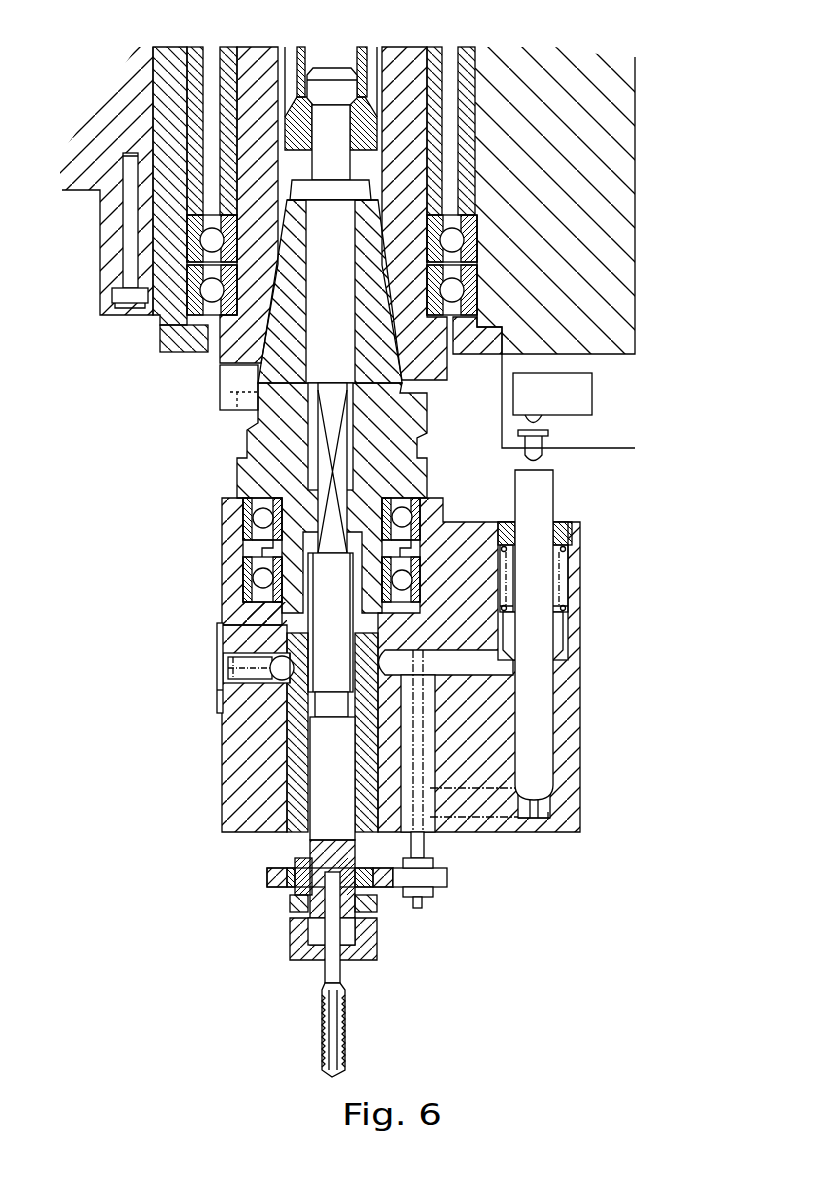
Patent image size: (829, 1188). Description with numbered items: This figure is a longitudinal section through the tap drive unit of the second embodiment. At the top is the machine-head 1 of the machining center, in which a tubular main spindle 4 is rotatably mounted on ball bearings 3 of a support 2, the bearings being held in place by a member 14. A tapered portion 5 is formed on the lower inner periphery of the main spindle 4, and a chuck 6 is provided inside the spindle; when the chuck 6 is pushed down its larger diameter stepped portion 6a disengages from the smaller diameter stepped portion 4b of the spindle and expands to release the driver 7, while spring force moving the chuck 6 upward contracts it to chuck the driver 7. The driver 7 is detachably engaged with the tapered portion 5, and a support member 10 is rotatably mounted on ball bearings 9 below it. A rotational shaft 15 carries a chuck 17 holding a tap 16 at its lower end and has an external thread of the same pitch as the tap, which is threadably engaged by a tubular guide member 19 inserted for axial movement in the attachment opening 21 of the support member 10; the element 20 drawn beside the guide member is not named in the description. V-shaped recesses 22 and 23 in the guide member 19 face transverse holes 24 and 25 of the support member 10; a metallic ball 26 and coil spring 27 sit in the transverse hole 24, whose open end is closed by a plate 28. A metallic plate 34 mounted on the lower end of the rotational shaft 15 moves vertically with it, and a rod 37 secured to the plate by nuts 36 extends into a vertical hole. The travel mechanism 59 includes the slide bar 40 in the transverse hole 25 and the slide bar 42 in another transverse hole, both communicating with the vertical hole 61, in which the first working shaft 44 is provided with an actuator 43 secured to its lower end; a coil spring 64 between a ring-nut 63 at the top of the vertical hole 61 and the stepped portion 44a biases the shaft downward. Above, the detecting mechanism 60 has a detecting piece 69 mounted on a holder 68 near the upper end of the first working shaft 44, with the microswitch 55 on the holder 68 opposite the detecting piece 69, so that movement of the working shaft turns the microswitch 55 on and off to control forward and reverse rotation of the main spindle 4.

The machine-head 1 is at (68, 192).
The support 2 is at (117, 316).
The ball bearings 3 is at (478, 246).
The main spindle 4 is at (405, 60).
The smaller diameter stepped portion 4b is at (372, 85).
The tapered portion 5 is at (370, 302).
The chuck 6 is at (388, 110).
The larger diameter stepped portion 6a is at (378, 92).
The driver 7 is at (237, 480).
The ball bearings 9 is at (420, 514).
The support member 10 is at (222, 533).
The member 14 is at (172, 353).
The rotational shaft 15 is at (280, 858).
The tap 16 is at (346, 1042).
The chuck 17 is at (378, 957).
The tubular guide member 19 is at (292, 780).
The sleeve tube 20 is at (309, 654).
The attachment opening 21 is at (292, 834).
The V-shaped recess 22 is at (285, 657).
The V-shaped recess 23 is at (385, 682).
The transverse hole 24 is at (245, 674).
The transverse hole 25 is at (438, 652).
The metallic ball 26 is at (283, 684).
The coil spring 27 is at (222, 652).
The plate 28 is at (218, 699).
The metallic plate 34 is at (386, 889).
The nuts 36 is at (433, 882).
The rod 37 is at (418, 912).
The slide bar 40 is at (470, 642).
The slide bar 42 is at (473, 822).
The actuator 43 is at (545, 750).
The first working shaft 44 is at (560, 635).
The stepped portion 44a is at (570, 607).
The microswitch 55 is at (592, 392).
The travel mechanism 59 is at (467, 862).
The detecting mechanism 60 is at (660, 414).
The vertical hole 61 is at (548, 834).
The ring-nut 63 is at (563, 522).
The coil spring 64 is at (568, 555).
The holder 68 is at (636, 442).
The detecting piece 69 is at (545, 460).